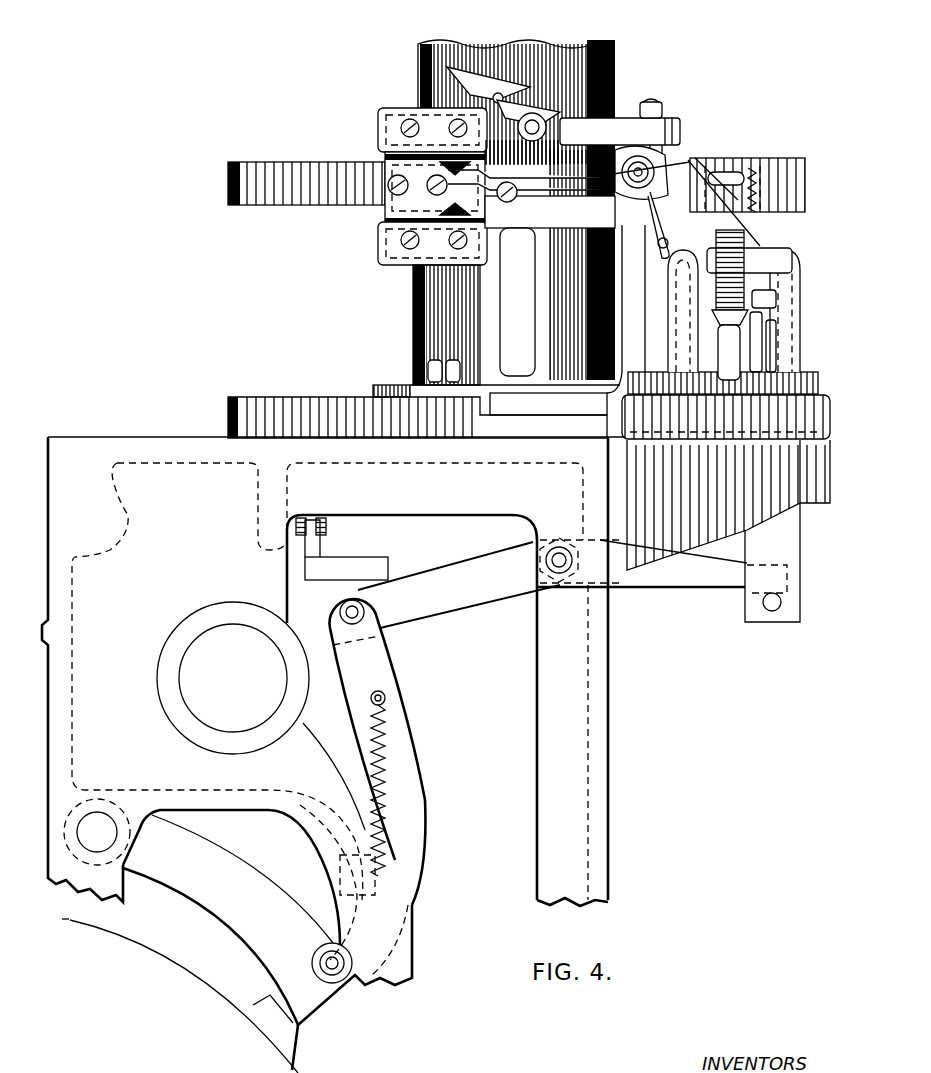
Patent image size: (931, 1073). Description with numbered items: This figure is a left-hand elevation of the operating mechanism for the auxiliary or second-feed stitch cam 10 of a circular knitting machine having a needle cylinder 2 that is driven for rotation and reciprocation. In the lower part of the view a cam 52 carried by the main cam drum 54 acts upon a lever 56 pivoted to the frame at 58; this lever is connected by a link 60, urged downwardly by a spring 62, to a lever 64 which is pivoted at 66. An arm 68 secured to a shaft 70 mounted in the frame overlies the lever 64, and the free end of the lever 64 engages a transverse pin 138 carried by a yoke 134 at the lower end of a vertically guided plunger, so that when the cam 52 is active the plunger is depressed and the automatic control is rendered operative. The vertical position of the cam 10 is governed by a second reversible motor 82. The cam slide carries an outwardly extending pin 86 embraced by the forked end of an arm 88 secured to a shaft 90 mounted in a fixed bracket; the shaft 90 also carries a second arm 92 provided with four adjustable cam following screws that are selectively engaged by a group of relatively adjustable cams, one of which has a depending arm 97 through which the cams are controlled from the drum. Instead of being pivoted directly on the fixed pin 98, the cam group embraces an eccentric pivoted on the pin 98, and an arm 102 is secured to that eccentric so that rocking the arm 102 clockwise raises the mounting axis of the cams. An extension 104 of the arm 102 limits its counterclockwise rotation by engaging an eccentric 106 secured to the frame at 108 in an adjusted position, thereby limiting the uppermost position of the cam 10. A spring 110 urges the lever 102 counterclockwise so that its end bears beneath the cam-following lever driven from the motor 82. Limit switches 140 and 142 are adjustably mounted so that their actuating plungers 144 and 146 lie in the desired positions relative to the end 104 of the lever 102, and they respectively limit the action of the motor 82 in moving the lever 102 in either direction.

The needle cylinder 2 is at (412, 292).
The auxiliary stitch cam 10 is at (447, 70).
The cam 52 is at (292, 1036).
The main cam drum 54 is at (205, 970).
The lever 56 is at (245, 888).
The pivot 58 is at (110, 816).
The link 60 is at (400, 720).
The spring 62 is at (380, 757).
The lever 64 is at (420, 605).
The pivot 66 is at (562, 547).
The arm 68 is at (371, 577).
The shaft 70 is at (326, 520).
The second reversible motor 82 is at (728, 470).
The pin 86 is at (490, 97).
The arm 88 is at (545, 97).
The shaft 90 is at (532, 140).
The second arm 92 is at (683, 120).
The depending arm 97 is at (668, 216).
The pin 98 is at (640, 186).
The arm 102 is at (698, 178).
The extension 104 is at (510, 179).
The eccentric 106 is at (506, 199).
The frame securing point 108 is at (516, 200).
The spring 110 is at (748, 210).
The yoke 134 is at (790, 550).
The transverse pin 138 is at (772, 612).
The limit switch 140 is at (380, 130).
The limit switch 142 is at (380, 240).
The actuating plunger 144 is at (450, 178).
The actuating plunger 146 is at (450, 192).